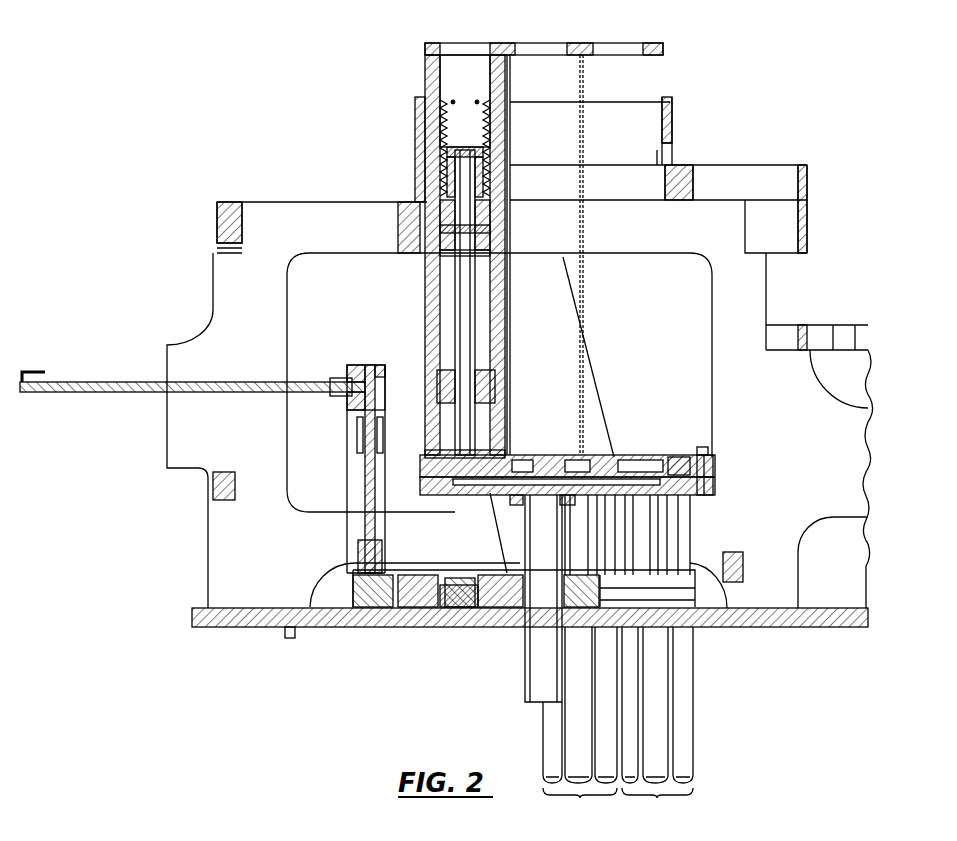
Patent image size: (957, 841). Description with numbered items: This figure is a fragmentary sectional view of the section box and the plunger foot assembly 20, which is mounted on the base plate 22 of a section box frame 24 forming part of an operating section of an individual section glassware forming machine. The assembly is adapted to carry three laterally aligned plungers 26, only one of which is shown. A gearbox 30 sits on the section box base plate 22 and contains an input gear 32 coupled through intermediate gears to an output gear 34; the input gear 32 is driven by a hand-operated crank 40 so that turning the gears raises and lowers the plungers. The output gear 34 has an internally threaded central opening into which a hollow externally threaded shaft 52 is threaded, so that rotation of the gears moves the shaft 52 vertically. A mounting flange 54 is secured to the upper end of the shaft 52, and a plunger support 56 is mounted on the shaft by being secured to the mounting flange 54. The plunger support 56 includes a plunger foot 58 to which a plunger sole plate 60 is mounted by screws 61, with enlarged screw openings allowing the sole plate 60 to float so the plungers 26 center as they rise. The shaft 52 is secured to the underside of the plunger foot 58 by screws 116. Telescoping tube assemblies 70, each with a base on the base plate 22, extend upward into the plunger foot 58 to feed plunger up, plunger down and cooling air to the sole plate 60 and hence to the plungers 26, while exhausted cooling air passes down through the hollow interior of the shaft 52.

The plunger foot assembly 20 is at (222, 328).
The base plate 22 is at (840, 610).
The section box frame 24 is at (818, 340).
The plunger 26 is at (422, 310).
The gearbox 30 is at (440, 610).
The input gear 32 is at (356, 607).
The output gear 34 is at (505, 592).
The hand-operated crank 40 is at (87, 382).
The hollow externally threaded shaft 52 is at (522, 680).
The mounting flange 54 is at (505, 497).
The plunger support 56 is at (640, 455).
The plunger foot 58 is at (700, 487).
The plunger sole plate 60 is at (675, 455).
The screws 61 is at (710, 450).
The telescoping tube assembly 70 is at (618, 723).
The screws 116 is at (520, 500).